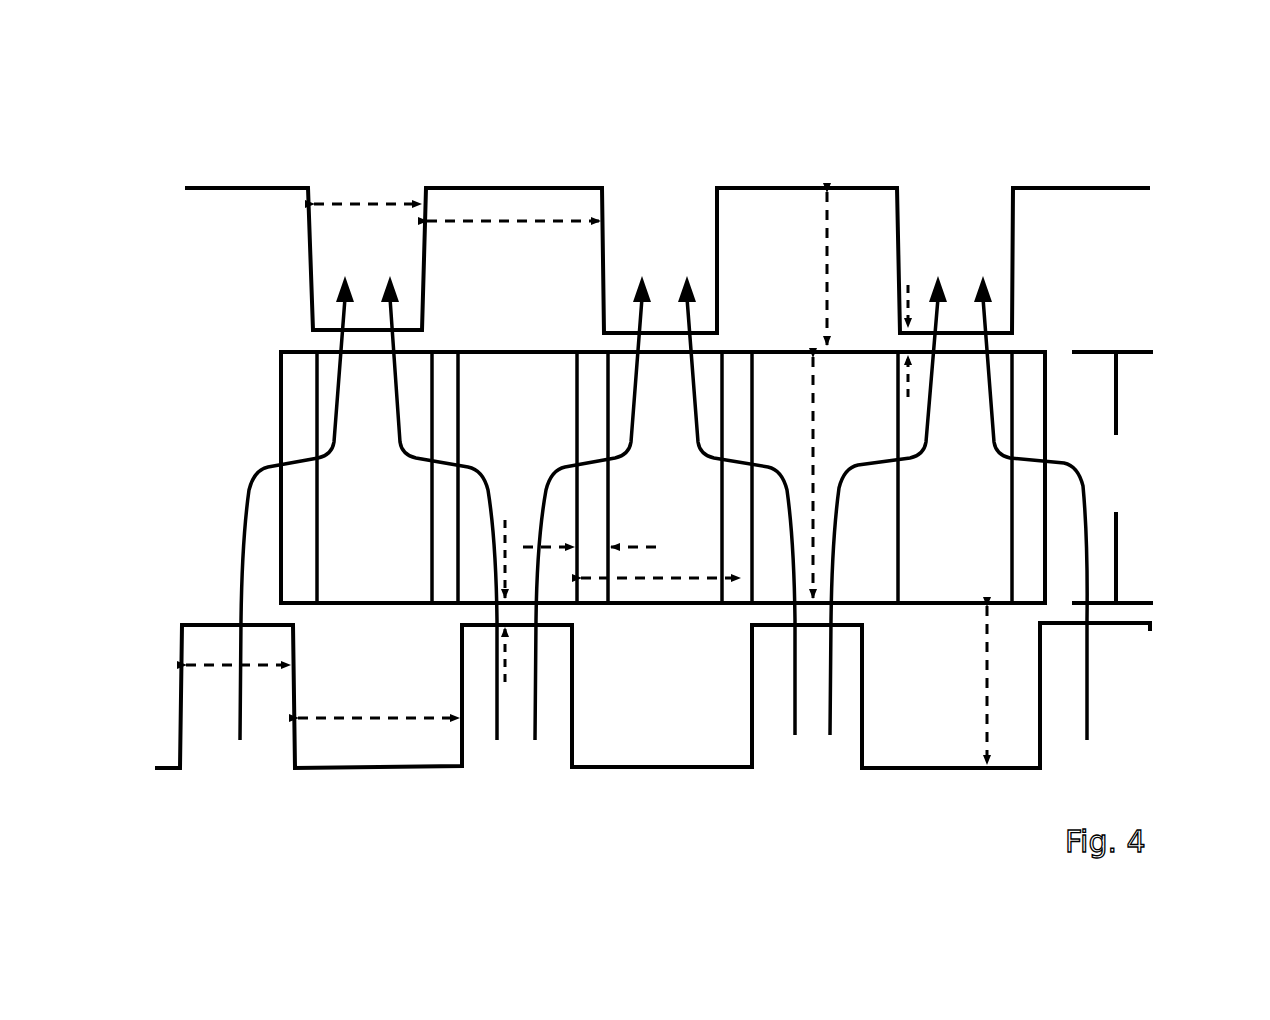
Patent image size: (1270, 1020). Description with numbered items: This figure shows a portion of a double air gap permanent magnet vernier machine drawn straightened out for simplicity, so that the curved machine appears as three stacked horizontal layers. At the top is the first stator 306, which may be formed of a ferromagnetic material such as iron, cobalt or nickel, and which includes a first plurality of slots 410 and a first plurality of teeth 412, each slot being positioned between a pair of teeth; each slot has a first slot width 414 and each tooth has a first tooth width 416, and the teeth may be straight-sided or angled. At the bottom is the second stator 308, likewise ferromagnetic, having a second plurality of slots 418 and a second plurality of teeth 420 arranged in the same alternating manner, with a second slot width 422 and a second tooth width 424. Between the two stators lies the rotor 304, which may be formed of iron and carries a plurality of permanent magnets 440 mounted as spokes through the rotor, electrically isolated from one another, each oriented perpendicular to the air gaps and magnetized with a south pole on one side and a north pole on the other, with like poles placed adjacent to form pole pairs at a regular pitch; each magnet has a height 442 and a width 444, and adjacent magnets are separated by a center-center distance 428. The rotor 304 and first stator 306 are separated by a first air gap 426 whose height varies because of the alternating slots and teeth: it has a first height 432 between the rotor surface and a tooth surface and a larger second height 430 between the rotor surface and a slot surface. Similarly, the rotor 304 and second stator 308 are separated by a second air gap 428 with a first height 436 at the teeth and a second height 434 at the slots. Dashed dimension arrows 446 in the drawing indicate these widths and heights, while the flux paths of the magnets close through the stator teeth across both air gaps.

The rotor 304 is at (966, 519).
The first stator 306 is at (262, 188).
The second stator 308 is at (157, 768).
The first plurality of slots 410 is at (1013, 188).
The first plurality of teeth 412 is at (383, 246).
The first slot width 414 is at (462, 218).
The first tooth width 416 is at (357, 200).
The second plurality of slots 418 is at (940, 768).
The second plurality of teeth 420 is at (241, 761).
The second slot width 422 is at (338, 716).
The second tooth width 424 is at (222, 662).
The first air gap 426 is at (1003, 341).
The second air gap 428 is at (1115, 610).
The second height 430 is at (822, 245).
The first height 432 is at (905, 297).
The second height 434 is at (982, 662).
The first height 436 is at (506, 522).
The plurality of permanent magnets 440 is at (642, 508).
The height 442 is at (811, 460).
The width 444 is at (650, 545).
The magnet width 446 is at (668, 600).